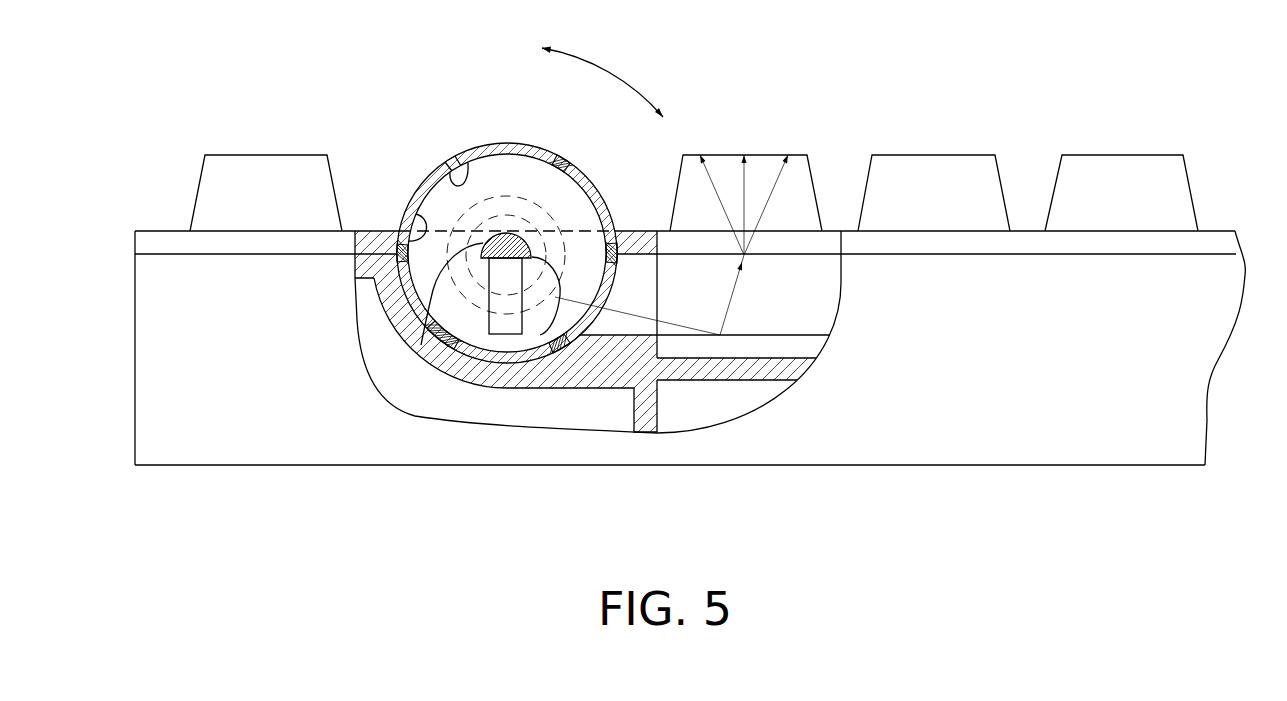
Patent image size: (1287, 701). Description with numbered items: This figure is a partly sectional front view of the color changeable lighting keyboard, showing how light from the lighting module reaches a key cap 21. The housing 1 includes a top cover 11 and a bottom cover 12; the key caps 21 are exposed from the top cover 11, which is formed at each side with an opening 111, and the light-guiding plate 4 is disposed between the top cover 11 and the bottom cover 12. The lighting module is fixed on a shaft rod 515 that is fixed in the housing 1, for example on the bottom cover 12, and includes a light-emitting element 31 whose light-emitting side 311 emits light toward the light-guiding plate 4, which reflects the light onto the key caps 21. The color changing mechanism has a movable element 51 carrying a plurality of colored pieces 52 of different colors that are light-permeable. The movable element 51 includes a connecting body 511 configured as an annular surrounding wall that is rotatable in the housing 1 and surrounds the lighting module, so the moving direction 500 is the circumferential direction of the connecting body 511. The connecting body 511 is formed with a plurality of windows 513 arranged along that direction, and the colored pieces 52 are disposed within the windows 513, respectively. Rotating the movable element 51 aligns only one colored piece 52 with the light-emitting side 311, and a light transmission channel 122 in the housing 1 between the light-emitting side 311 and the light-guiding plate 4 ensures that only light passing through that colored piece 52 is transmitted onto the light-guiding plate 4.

The housing 1 is at (1224, 195).
The top cover 11 is at (161, 240).
The opening 111 is at (409, 203).
The bottom cover 12 is at (585, 372).
The light transmission channel 122 is at (623, 322).
The key cap 21 is at (773, 155).
The light-emitting element 31 is at (540, 307).
The light-emitting side 311 is at (563, 262).
The light-guiding plate 4 is at (797, 283).
The moving direction 500 is at (592, 53).
The movable element 51 is at (400, 293).
The connecting body 511 is at (566, 143).
The window 513 is at (448, 202).
The shaft rod 515 is at (408, 483).
The colored piece 52 is at (427, 182).